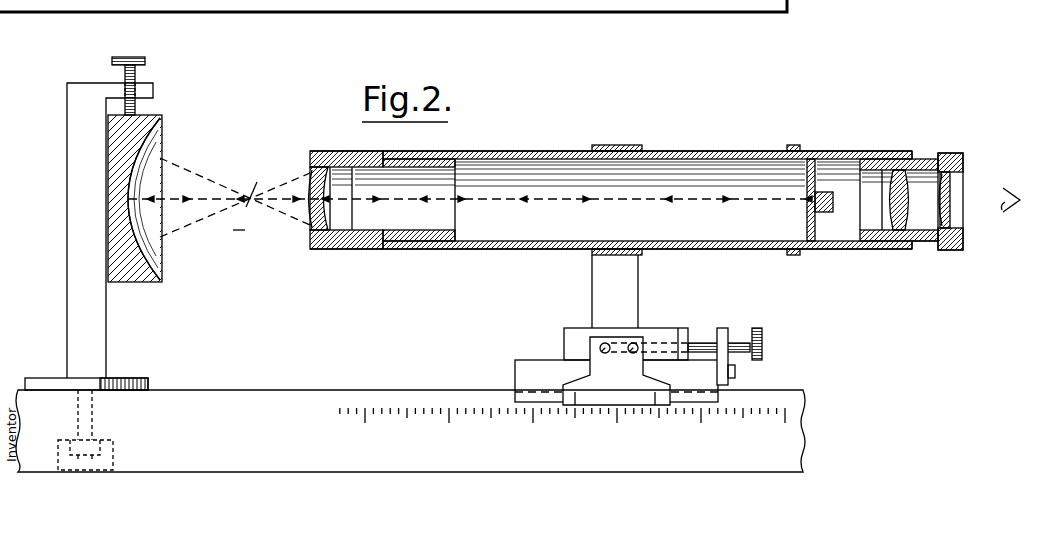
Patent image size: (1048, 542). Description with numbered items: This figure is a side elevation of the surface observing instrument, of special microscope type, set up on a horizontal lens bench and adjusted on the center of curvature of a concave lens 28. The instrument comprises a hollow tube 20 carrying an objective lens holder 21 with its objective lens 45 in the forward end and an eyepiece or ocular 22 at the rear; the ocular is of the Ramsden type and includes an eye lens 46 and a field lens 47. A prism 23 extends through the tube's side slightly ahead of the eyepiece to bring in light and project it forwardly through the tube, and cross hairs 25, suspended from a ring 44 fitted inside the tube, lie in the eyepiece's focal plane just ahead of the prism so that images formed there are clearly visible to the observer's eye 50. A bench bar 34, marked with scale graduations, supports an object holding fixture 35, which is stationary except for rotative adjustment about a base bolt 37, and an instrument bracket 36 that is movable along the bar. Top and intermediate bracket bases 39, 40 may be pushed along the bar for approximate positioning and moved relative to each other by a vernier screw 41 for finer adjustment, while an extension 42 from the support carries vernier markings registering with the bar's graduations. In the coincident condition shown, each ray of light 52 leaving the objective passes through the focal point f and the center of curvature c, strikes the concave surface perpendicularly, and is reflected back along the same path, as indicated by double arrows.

The hollow tube 20 is at (537, 153).
The objective lens holder 21 is at (343, 163).
The eyepiece or ocular 22 is at (918, 156).
The prism 23 is at (833, 212).
The cross hairs 25 is at (810, 201).
The concave lens 28 is at (160, 137).
The bench bar 34 is at (340, 382).
The object holding fixture 35 is at (78, 183).
The instrument bracket 36 is at (598, 268).
The base bolt 37 is at (95, 416).
The top bracket base 39 is at (572, 337).
The intermediate bracket base 40 is at (528, 364).
The vernier screw 41 is at (757, 338).
The extension 42 is at (654, 387).
The ring 44 is at (806, 228).
The objective lens 45 is at (307, 225).
The eye lens 46 is at (960, 189).
The field lens 47 is at (924, 250).
The observer's eye 50 is at (1008, 210).
The ray of light 52 is at (543, 200).